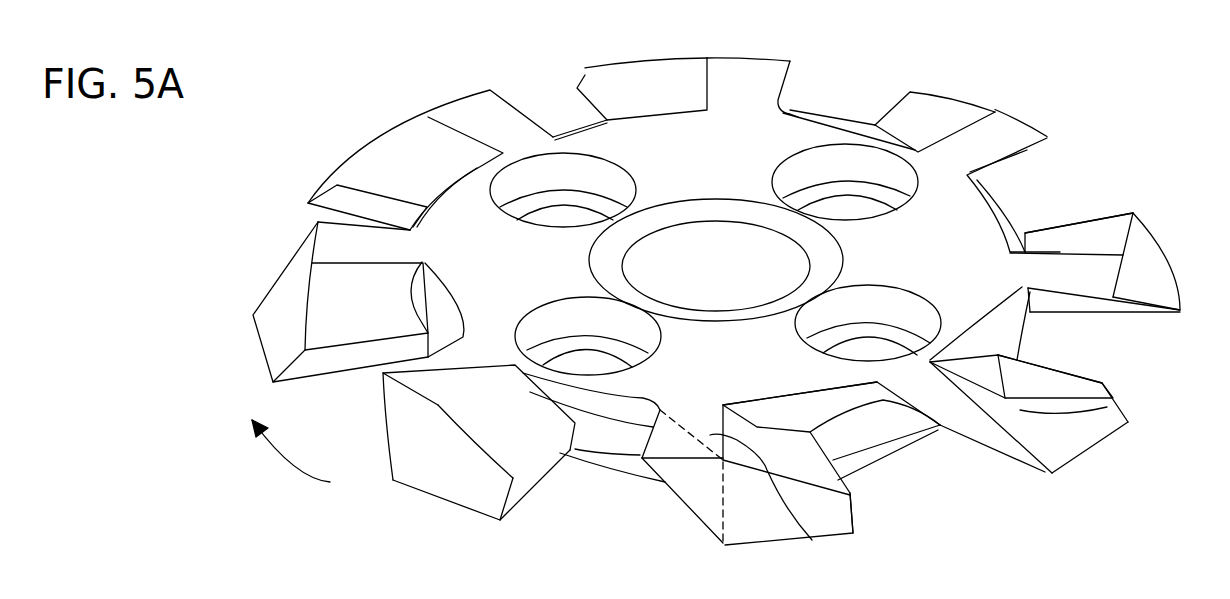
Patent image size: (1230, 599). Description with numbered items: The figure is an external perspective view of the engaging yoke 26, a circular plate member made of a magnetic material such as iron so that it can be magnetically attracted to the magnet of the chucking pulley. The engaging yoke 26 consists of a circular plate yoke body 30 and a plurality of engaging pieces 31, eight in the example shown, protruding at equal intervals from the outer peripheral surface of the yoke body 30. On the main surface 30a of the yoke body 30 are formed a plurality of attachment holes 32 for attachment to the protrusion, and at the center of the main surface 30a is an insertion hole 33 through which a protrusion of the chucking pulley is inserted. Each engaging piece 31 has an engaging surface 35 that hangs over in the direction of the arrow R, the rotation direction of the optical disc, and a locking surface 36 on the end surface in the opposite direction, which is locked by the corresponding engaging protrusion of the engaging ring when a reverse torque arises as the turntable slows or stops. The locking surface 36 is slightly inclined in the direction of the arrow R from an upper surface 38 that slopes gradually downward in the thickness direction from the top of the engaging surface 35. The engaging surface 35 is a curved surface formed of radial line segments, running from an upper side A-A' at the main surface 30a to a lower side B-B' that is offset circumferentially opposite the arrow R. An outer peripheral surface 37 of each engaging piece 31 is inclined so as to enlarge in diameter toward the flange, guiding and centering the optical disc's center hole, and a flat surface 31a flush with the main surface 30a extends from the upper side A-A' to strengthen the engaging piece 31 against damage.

The engaging yoke 26 is at (184, 142).
The yoke body 30 is at (935, 222).
The main surface 30a is at (757, 157).
The engaging piece 31 is at (1108, 248).
The flat surface 31a is at (340, 242).
The attachment hole 32 is at (543, 180).
The insertion hole 33 is at (677, 245).
The engaging surface 35 is at (1083, 300).
The locking surface 36 is at (332, 357).
The outer peripheral surface 37 is at (1150, 253).
The upper surface 38 is at (1120, 223).